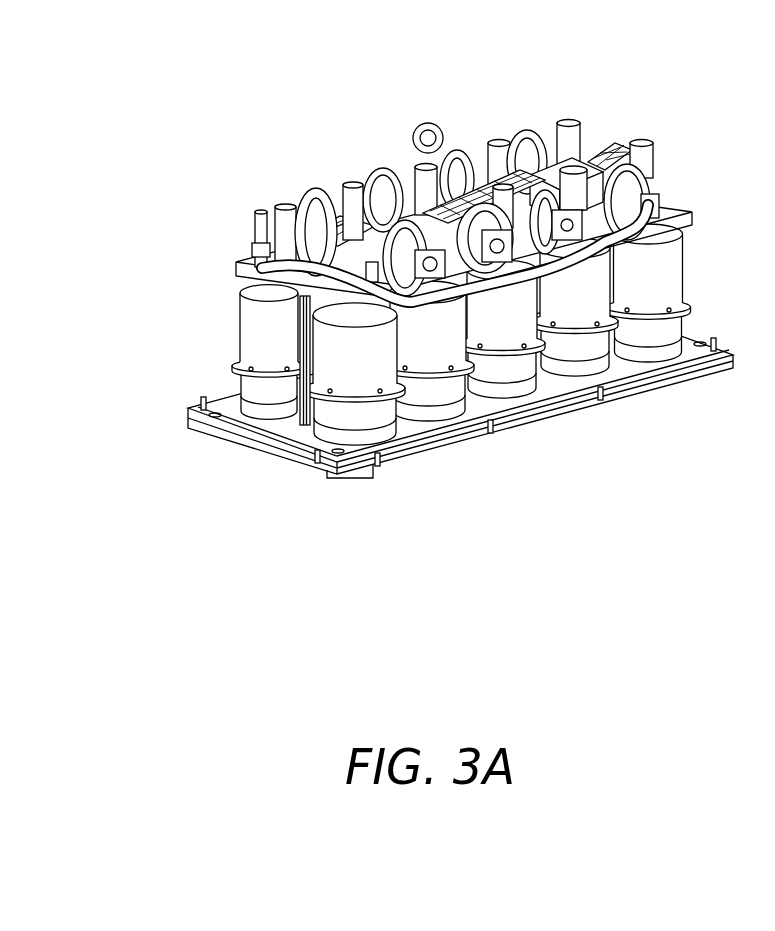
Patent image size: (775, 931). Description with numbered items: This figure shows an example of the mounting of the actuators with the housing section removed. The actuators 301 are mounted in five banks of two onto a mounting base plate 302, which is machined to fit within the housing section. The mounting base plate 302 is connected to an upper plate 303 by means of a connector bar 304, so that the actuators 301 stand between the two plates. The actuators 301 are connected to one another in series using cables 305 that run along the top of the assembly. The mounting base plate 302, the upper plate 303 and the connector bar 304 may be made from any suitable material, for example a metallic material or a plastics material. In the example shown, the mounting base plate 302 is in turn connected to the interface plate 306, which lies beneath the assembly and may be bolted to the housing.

The actuator 301 is at (377, 352).
The base plate 302 is at (478, 408).
The upper plate 303 is at (237, 260).
The connector bar 304 is at (300, 338).
The cables 305 is at (370, 168).
The interface plate 306 is at (645, 390).